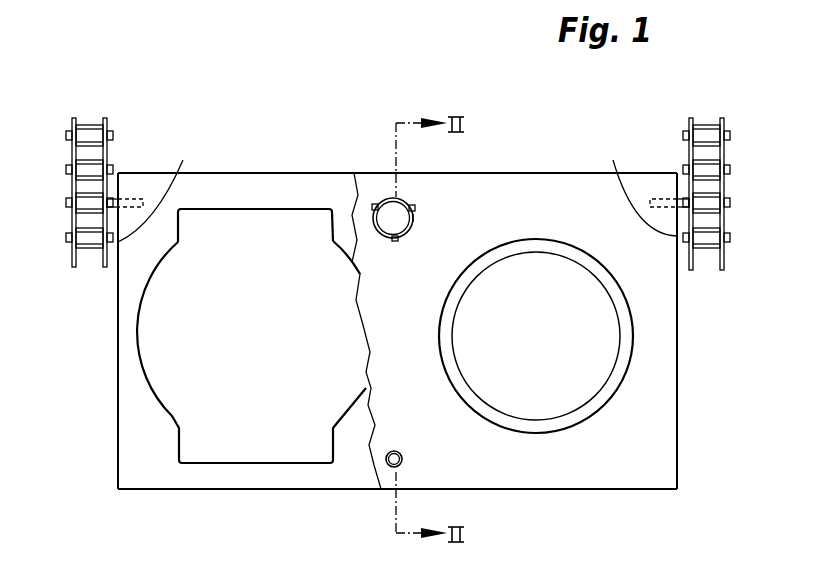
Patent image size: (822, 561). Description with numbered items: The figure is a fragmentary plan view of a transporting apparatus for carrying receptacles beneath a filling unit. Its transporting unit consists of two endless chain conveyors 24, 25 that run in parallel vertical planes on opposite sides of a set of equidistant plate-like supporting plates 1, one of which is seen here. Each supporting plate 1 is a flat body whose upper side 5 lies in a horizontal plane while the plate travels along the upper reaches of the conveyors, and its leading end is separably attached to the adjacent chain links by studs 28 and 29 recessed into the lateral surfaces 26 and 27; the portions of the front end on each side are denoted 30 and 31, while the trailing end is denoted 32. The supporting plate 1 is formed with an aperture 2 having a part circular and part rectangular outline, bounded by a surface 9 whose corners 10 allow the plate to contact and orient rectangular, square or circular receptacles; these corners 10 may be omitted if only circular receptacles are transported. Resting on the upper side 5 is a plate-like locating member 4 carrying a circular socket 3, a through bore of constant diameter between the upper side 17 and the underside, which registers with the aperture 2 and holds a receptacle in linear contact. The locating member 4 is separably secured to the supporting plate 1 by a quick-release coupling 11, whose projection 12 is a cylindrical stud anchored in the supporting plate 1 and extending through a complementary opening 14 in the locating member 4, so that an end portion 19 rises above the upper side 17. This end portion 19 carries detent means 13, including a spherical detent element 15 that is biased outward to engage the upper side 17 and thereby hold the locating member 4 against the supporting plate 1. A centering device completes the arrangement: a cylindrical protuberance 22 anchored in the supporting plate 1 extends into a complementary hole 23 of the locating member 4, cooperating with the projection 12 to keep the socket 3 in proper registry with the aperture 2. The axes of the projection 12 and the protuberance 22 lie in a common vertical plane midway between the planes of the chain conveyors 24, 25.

The supporting plate 1 is at (253, 481).
The aperture 2 is at (180, 413).
The socket 3 is at (590, 382).
The locating member 4 is at (612, 476).
The upper side 5 is at (355, 473).
The surface bounding the aperture 9 is at (137, 341).
The corners 10 is at (182, 215).
The quick-release coupling 11 is at (389, 228).
The projection 12 is at (392, 212).
The detent means 13 is at (414, 218).
The opening 14 is at (410, 206).
The detent element 15 is at (372, 208).
The upper side 17 is at (556, 216).
The end portion 19 is at (406, 237).
The protuberance 22 is at (402, 461).
The hole 23 is at (397, 451).
The chain conveyor 24 is at (88, 130).
The chain conveyor 25 is at (704, 126).
The lateral surface 26 is at (118, 358).
The lateral surface 27 is at (678, 352).
The stud 28 is at (112, 196).
The stud 29 is at (684, 197).
The front end portion 30 is at (165, 191).
The front end portion 31 is at (634, 188).
The trailing end 32 is at (550, 478).